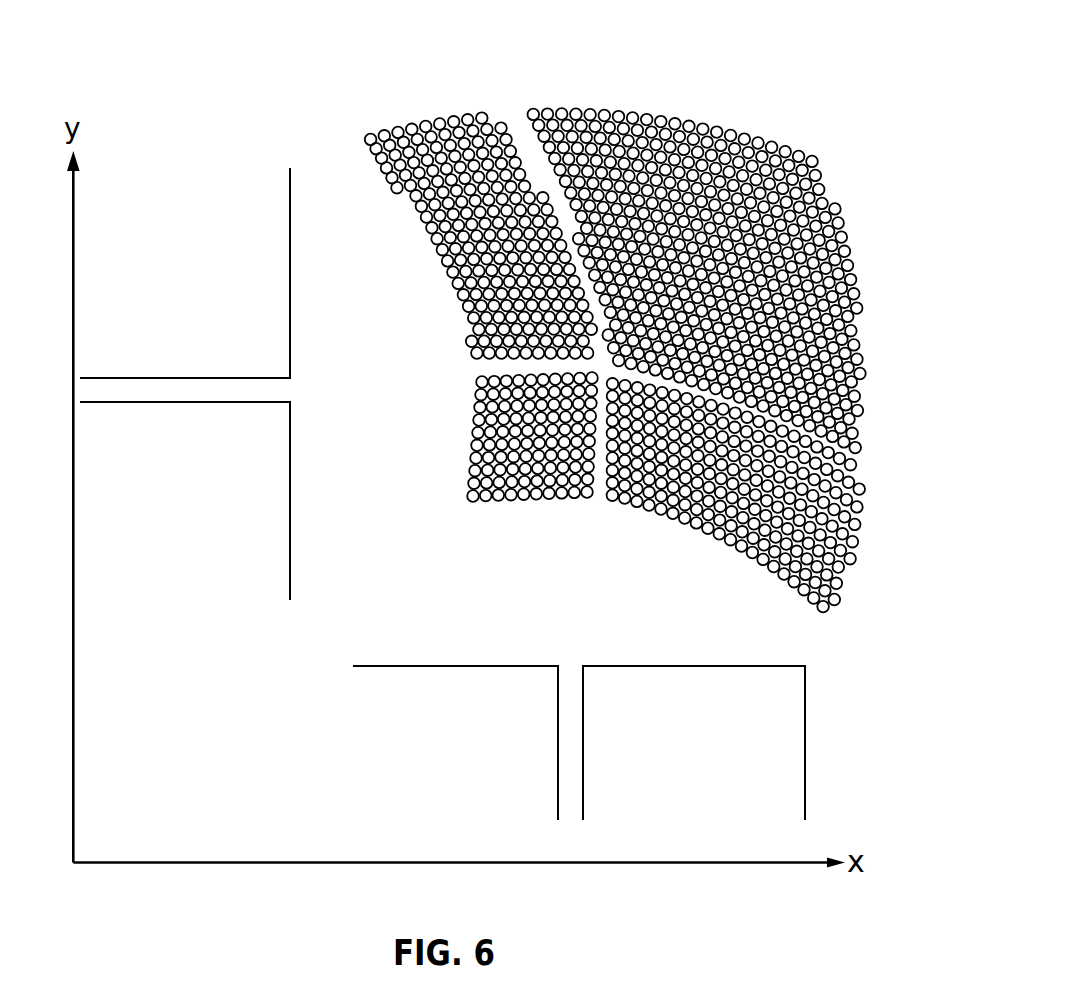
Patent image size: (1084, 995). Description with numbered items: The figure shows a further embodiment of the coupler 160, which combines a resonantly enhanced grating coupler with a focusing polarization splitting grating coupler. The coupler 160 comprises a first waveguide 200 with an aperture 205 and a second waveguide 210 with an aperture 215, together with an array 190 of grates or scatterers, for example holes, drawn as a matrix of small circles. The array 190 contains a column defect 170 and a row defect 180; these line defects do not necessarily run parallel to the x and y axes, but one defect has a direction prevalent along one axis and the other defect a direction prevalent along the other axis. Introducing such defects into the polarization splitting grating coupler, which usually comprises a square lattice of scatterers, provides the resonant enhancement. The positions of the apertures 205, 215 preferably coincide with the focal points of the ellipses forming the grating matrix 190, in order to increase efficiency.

The coupler 160 is at (303, 28).
The column defect 170 is at (506, 107).
The row defect 180 is at (865, 465).
The array of grates or scatterers 190 is at (842, 123).
The first waveguide 200 is at (157, 387).
The aperture 205 is at (290, 392).
The second waveguide 210 is at (577, 767).
The aperture 215 is at (572, 663).